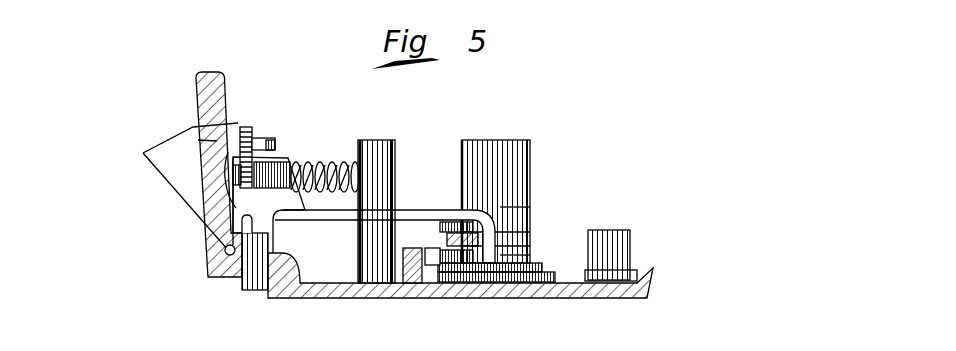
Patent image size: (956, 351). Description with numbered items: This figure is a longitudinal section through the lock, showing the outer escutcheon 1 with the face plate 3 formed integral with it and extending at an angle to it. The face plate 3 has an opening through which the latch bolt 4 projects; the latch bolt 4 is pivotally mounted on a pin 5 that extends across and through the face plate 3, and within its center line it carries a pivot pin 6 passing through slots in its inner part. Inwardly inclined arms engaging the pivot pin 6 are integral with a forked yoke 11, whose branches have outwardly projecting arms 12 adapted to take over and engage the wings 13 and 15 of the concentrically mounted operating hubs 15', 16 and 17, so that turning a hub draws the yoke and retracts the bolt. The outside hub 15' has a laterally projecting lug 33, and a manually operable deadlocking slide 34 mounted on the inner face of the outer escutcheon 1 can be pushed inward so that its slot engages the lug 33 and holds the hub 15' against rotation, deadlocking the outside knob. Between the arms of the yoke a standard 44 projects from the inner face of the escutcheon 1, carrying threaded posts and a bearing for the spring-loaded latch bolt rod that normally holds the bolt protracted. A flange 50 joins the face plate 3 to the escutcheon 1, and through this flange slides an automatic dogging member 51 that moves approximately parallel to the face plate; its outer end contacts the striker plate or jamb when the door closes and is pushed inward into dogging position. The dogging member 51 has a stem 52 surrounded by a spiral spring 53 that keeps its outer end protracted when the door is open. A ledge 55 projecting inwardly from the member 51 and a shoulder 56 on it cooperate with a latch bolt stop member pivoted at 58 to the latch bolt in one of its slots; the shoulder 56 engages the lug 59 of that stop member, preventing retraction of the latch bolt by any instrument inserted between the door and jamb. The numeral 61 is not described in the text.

The outer escutcheon 1 is at (578, 288).
The face plate 3 is at (191, 92).
The latch bolt 4 is at (232, 196).
The pin 5 is at (225, 250).
The pivot pin 6 is at (232, 212).
The forked yoke 11 is at (407, 212).
The outwardly projecting arms 12 is at (488, 228).
The wing 13 is at (475, 273).
The wing 15 is at (431, 297).
The outside hub 15' is at (588, 249).
The operating hub 16 is at (530, 238).
The operating hub 17 is at (518, 210).
The laterally projecting lug 33 is at (434, 250).
The deadlocking slide 34 is at (413, 284).
The standard 44 is at (372, 284).
The flange 50 is at (233, 279).
The automatic dogging member 51 is at (254, 292).
The stem 52 is at (245, 128).
The spiral spring 53 is at (248, 150).
The ledge 55 is at (262, 162).
The shoulder 56 is at (300, 165).
The pivot 58 is at (217, 141).
The lug 59 is at (276, 142).
The spring wire 61 is at (215, 183).